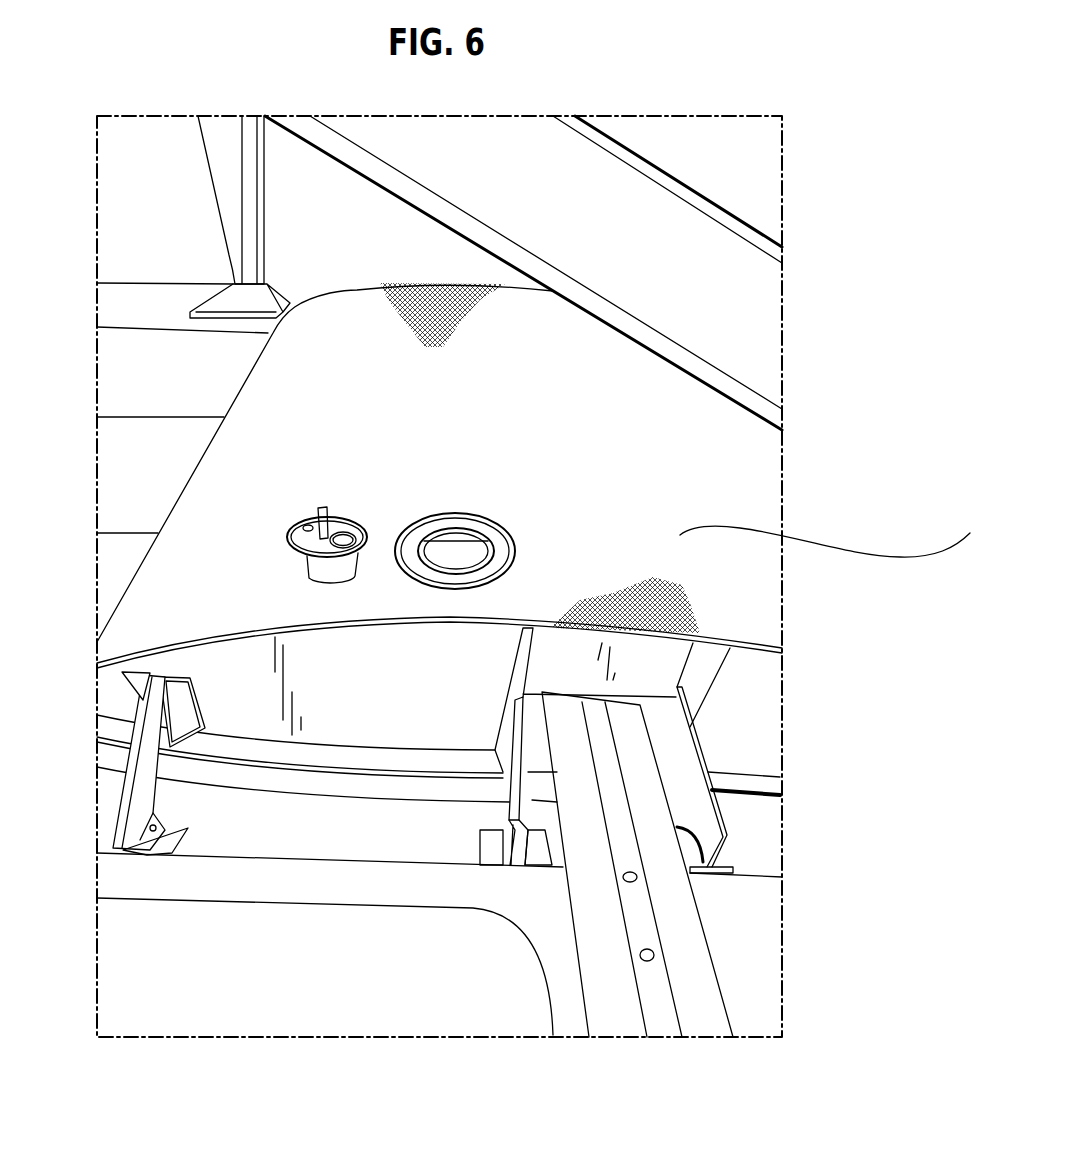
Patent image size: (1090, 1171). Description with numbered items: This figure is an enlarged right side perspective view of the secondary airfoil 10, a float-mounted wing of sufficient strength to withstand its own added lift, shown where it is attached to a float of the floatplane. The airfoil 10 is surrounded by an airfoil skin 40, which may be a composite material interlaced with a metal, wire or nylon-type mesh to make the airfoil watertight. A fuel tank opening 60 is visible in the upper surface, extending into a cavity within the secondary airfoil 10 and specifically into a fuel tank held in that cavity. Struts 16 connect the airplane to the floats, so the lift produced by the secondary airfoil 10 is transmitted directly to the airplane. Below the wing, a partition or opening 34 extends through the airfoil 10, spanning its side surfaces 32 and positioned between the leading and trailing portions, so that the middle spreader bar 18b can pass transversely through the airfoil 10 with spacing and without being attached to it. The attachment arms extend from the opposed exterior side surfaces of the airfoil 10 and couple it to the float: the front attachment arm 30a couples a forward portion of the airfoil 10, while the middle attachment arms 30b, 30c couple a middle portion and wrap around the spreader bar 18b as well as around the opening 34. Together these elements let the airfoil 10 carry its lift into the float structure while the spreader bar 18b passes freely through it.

The secondary airfoil 10 is at (566, 434).
The struts 16 is at (688, 277).
The side surfaces 32 is at (431, 672).
The opening 34 is at (632, 690).
The airfoil skin 40 is at (242, 501).
The fuel tank opening 60 is at (467, 545).
The front attachment arm 30a is at (162, 800).
The middle attachment arm 30b is at (512, 808).
The middle attachment arm 30c is at (697, 798).
The middle spreader bar 18b is at (647, 937).